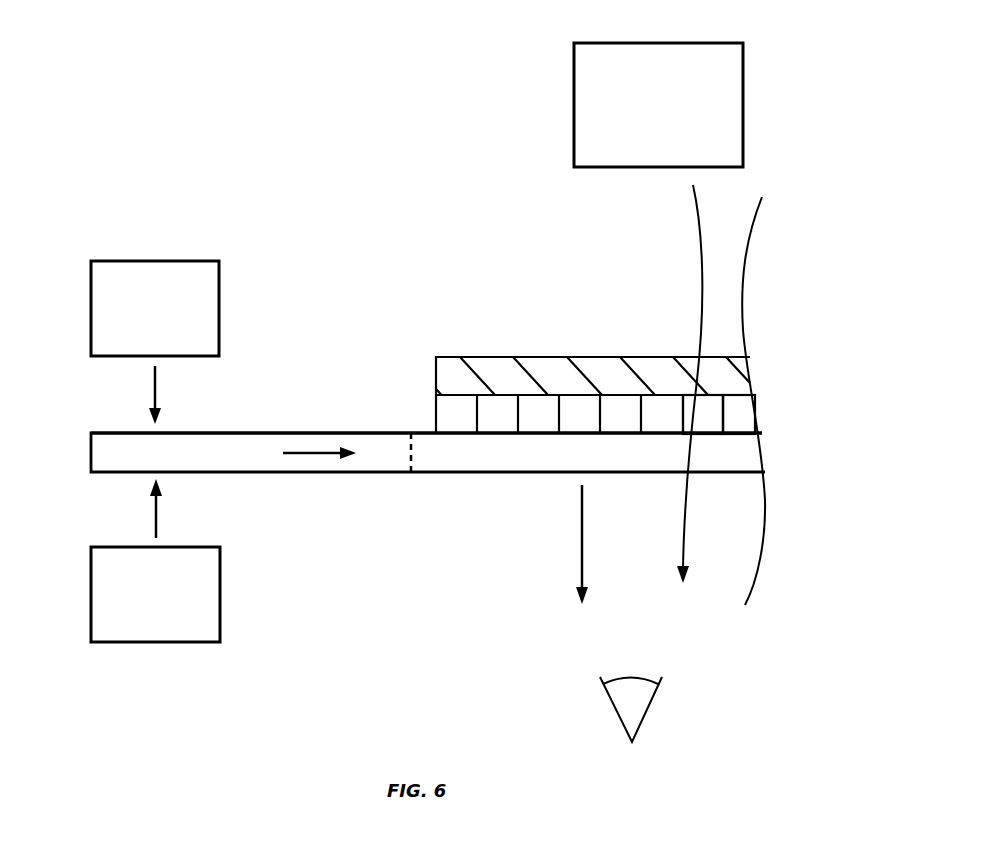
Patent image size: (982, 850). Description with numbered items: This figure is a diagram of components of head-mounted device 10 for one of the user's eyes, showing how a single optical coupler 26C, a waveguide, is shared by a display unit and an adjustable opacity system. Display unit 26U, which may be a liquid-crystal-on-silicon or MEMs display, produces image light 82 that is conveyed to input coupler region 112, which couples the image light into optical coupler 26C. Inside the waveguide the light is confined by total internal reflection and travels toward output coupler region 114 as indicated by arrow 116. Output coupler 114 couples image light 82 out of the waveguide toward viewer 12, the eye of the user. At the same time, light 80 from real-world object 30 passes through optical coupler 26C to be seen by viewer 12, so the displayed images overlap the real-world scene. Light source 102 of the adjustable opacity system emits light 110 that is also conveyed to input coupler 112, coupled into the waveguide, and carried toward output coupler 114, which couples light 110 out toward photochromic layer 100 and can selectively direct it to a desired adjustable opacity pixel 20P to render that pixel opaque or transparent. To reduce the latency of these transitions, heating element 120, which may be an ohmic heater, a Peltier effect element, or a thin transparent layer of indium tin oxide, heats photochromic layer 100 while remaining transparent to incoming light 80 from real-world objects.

The head-mounted device 10 is at (193, 87).
The real-world object 30 is at (743, 95).
The light source 102 is at (219, 303).
The light from light source 110 is at (155, 387).
The optical coupler 26C is at (86, 433).
The image light 82 is at (156, 513).
The display unit 26U is at (160, 645).
The input coupler region 112 is at (315, 432).
The arrow 116 is at (320, 455).
The output coupler region 114 is at (473, 455).
The photochromic layer 100 is at (428, 395).
The adjustable opacity pixel 20P is at (713, 410).
The heating element 120 is at (593, 368).
The light from real-world object 80 is at (702, 245).
The viewer 12 is at (650, 712).